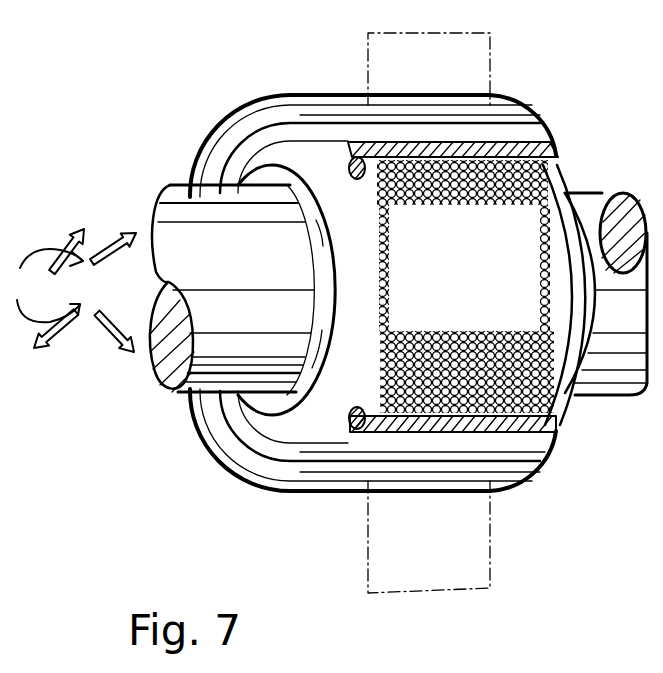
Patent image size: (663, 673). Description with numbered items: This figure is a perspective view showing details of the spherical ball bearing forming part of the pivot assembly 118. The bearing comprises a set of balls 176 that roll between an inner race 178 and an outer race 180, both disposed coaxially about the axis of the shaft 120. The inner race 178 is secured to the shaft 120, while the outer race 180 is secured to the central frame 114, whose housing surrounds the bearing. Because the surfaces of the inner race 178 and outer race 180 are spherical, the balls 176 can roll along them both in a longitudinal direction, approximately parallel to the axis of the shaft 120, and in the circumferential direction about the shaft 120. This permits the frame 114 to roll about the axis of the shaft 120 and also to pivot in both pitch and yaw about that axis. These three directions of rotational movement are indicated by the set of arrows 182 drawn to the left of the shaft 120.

The central frame 114 is at (368, 34).
The pivot assembly 118 is at (218, 475).
The shaft 120 is at (637, 392).
The balls 176 is at (553, 177).
The inner race 178 is at (233, 408).
The outer race 180 is at (268, 493).
The set of arrows 182 is at (100, 237).